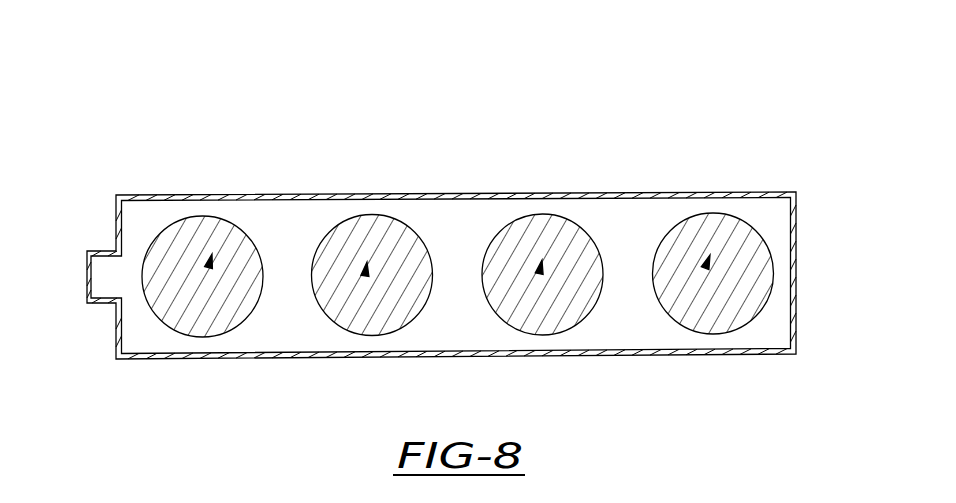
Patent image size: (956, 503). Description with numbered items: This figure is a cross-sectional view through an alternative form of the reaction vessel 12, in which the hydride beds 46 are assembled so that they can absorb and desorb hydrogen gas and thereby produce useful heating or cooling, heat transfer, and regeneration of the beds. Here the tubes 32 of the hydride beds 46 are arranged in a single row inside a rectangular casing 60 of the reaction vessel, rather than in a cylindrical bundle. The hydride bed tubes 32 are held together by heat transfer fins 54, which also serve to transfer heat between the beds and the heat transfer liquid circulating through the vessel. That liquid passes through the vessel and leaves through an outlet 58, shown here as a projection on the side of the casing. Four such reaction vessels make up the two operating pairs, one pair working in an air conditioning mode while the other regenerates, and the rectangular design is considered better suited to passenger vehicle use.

The reaction vessel 12 is at (468, 202).
The tubes 32 is at (218, 219).
The hydride beds 46 is at (208, 268).
The heat transfer fins 54 is at (775, 325).
The outlet 58 is at (105, 305).
The rectangular casing 60 is at (475, 193).